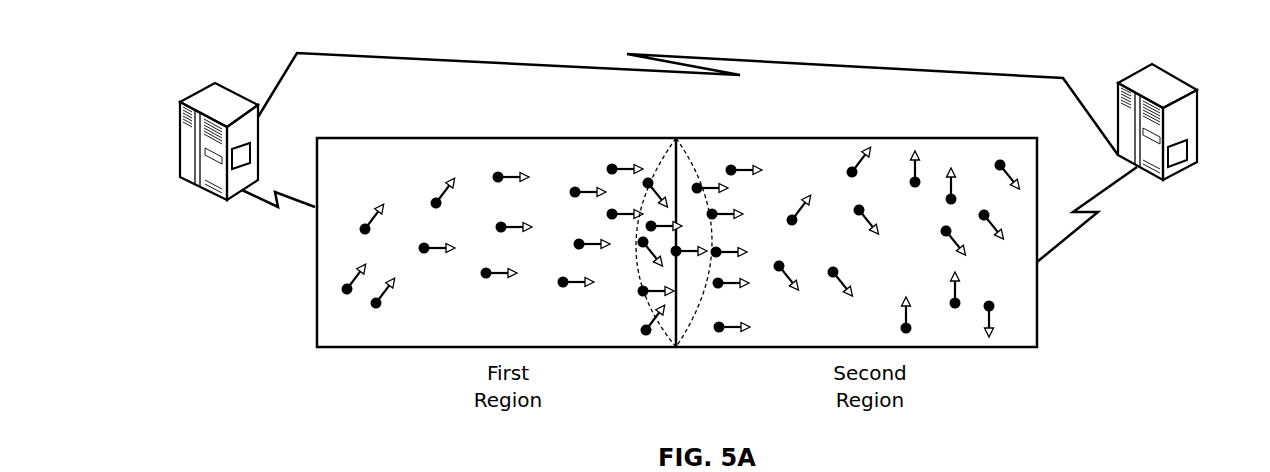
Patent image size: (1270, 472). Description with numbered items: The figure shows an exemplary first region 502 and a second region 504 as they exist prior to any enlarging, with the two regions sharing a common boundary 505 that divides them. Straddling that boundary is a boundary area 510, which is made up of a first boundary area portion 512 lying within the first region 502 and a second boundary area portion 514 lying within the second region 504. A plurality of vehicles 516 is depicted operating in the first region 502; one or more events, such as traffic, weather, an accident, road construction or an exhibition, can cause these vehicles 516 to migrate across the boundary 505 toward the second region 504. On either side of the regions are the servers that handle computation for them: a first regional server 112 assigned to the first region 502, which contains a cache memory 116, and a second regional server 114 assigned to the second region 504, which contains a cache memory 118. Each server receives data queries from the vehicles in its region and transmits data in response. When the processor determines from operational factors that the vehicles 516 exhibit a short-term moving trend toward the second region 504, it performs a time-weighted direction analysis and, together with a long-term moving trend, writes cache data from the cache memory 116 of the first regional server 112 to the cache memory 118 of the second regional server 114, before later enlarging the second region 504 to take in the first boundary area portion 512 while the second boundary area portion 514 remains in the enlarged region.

The first regional server 112 is at (219, 181).
The second regional server 114 is at (1158, 163).
The cache memory 116 is at (237, 115).
The cache memory 118 is at (1206, 116).
The first region 502 is at (496, 204).
The second region 504 is at (856, 219).
The boundary 505 is at (632, 215).
The boundary area 510 is at (626, 219).
The first boundary area portion 512 is at (625, 370).
The second boundary area portion 514 is at (722, 341).
The vehicles 516 is at (409, 136).